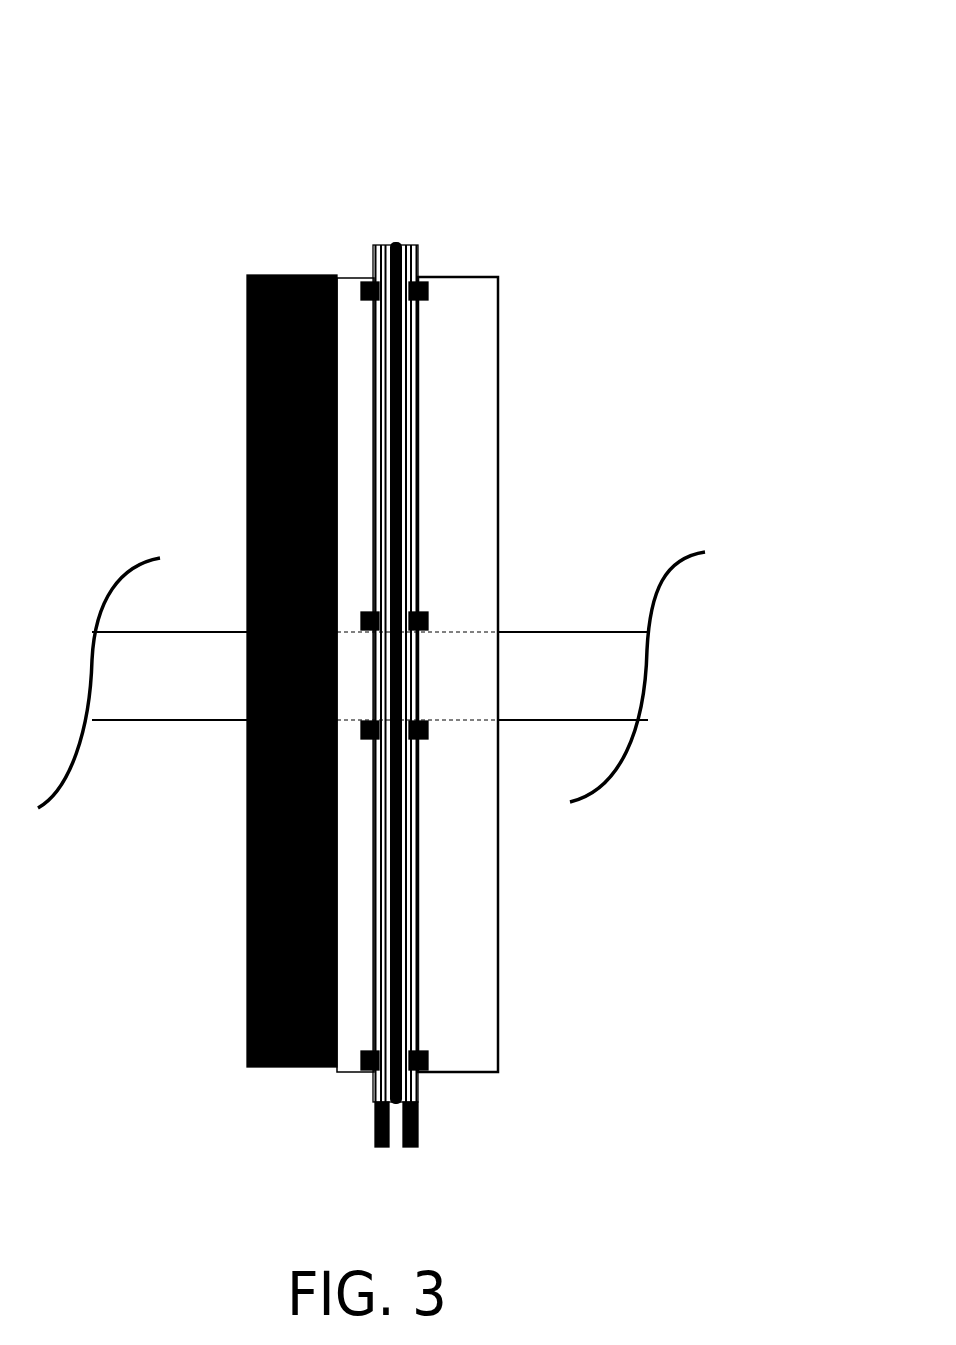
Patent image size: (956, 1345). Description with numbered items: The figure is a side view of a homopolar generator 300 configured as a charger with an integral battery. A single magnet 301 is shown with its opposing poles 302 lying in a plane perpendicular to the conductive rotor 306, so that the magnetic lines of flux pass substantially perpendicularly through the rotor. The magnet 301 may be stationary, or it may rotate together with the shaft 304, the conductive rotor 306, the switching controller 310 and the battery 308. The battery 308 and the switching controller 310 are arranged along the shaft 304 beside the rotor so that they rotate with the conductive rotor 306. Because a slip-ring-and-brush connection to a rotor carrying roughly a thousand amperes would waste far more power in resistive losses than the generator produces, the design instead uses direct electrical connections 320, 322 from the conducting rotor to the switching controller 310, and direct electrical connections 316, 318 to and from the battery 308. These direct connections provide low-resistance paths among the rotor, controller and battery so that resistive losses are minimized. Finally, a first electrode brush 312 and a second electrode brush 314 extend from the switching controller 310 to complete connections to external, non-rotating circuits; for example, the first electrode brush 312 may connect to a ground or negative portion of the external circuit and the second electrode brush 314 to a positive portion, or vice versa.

The homopolar generator 300 is at (340, 80).
The magnet 301 is at (247, 333).
The opposing poles 302 is at (322, 253).
The shaft 304 is at (128, 720).
The conductive rotor 306 is at (352, 278).
The battery 308 is at (467, 290).
The switching controller 310 is at (407, 245).
The first electrode brush 312 is at (378, 1147).
The second electrode brush 314 is at (408, 1147).
The direct electrical connection 316 is at (430, 728).
The direct electrical connection 318 is at (430, 1073).
The direct electrical connection 320 is at (367, 612).
The direct electrical connection 322 is at (363, 1072).